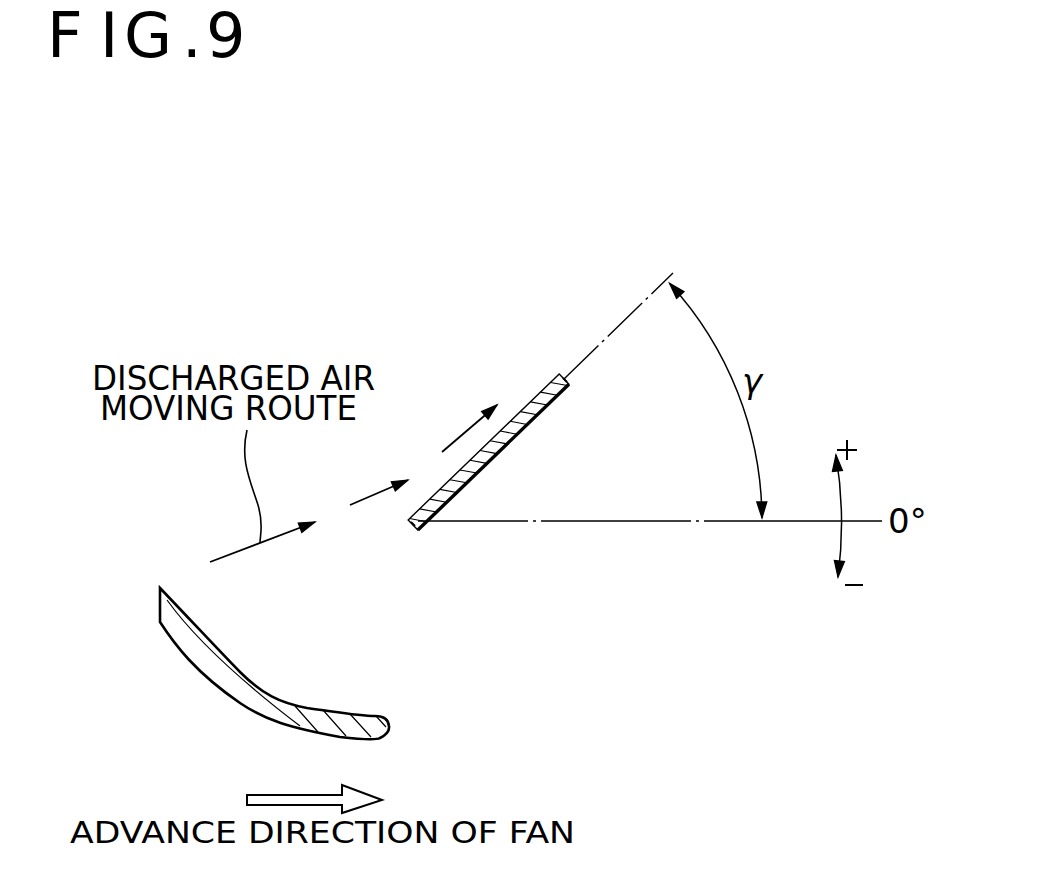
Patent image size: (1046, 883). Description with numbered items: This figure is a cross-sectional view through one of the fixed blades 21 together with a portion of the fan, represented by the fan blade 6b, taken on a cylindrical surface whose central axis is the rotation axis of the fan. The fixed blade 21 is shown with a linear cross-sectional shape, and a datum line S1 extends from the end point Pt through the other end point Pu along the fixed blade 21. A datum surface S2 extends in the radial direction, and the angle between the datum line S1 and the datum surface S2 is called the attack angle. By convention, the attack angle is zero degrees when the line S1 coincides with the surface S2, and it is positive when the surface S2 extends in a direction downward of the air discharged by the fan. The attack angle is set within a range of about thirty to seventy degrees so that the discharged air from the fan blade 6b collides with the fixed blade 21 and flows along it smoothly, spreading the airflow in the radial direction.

The fixed blade 21 is at (544, 386).
The fan blade portion 6b is at (227, 683).
The datum line S1 is at (641, 301).
The datum surface S2 is at (652, 522).
The end point of fixed blade cross-section Pt is at (420, 546).
The end point of fixed blade cross-section Pu is at (595, 383).